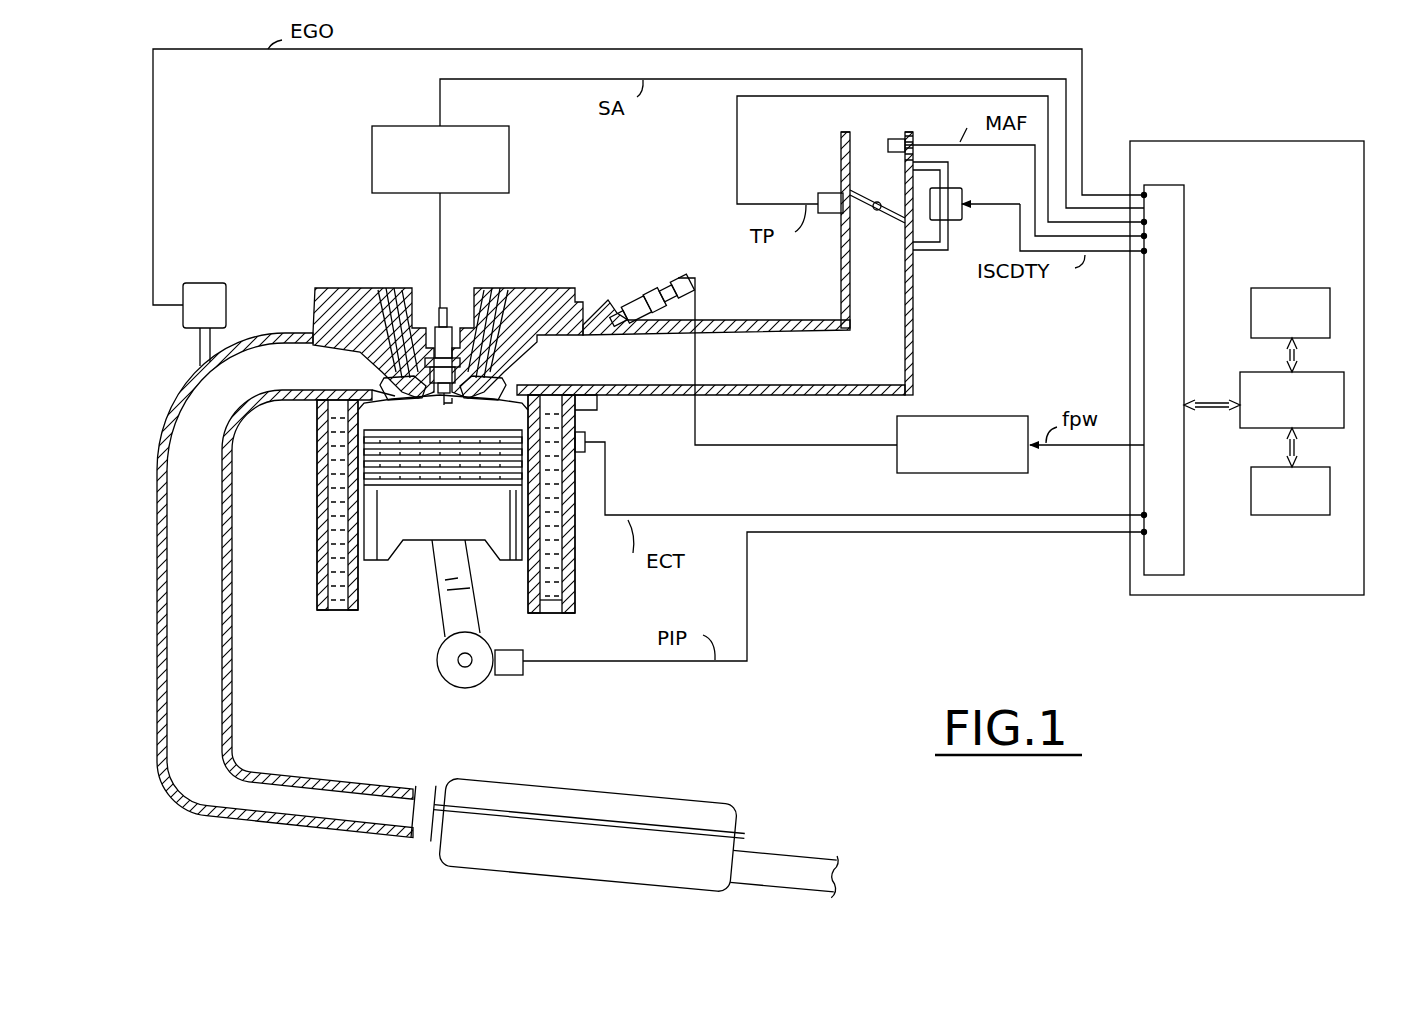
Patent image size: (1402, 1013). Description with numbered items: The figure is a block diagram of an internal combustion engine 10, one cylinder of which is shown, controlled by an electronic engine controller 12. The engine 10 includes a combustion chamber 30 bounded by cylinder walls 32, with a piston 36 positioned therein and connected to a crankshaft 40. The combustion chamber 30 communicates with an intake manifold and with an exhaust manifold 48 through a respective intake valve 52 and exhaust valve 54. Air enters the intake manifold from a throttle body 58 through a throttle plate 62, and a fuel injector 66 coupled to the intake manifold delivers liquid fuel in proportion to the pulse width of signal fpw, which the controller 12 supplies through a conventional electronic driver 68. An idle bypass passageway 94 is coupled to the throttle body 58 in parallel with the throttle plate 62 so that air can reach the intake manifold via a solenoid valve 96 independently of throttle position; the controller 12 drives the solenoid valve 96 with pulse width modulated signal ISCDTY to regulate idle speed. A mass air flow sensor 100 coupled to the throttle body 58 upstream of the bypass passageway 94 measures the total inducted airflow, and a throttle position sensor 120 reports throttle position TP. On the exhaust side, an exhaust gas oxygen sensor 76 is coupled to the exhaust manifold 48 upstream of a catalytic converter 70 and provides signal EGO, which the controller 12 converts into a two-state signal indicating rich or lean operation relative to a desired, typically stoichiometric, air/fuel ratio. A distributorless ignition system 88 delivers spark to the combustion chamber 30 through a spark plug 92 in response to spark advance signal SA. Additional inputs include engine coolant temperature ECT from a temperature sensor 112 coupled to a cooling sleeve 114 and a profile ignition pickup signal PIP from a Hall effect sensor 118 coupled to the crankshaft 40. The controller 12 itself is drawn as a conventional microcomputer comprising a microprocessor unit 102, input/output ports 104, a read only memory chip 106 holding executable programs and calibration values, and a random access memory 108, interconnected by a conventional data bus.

The internal combustion engine 10 is at (318, 222).
The electronic engine controller 12 is at (1320, 197).
The combustion chamber 30 is at (364, 458).
The cylinder walls 32 is at (368, 613).
The piston 36 is at (425, 525).
The crankshaft 40 is at (437, 668).
The exhaust manifold 48 is at (186, 401).
The intake valve 52 is at (505, 384).
The exhaust valve 54 is at (395, 383).
The throttle body 58 is at (850, 250).
The throttle plate 62 is at (877, 202).
The fuel injector 66 is at (630, 300).
The electronic driver 68 is at (975, 416).
The catalytic converter 70 is at (587, 787).
The exhaust gas oxygen sensor 76 is at (207, 283).
The distributorless ignition system 88 is at (372, 142).
The spark plug 92 is at (450, 332).
The idle bypass passageway 94 is at (950, 175).
The solenoid valve 96 is at (960, 225).
The mass air flow sensor 100 is at (905, 139).
The microprocessor unit 102 is at (1253, 366).
The input/output ports 104 is at (1186, 250).
The read only memory chip 106 is at (1300, 288).
The random access memory 108 is at (1297, 515).
The temperature sensor 112 is at (587, 432).
The cooling sleeve 114 is at (580, 593).
The Hall effect sensor 118 is at (517, 675).
The throttle position sensor 120 is at (830, 193).